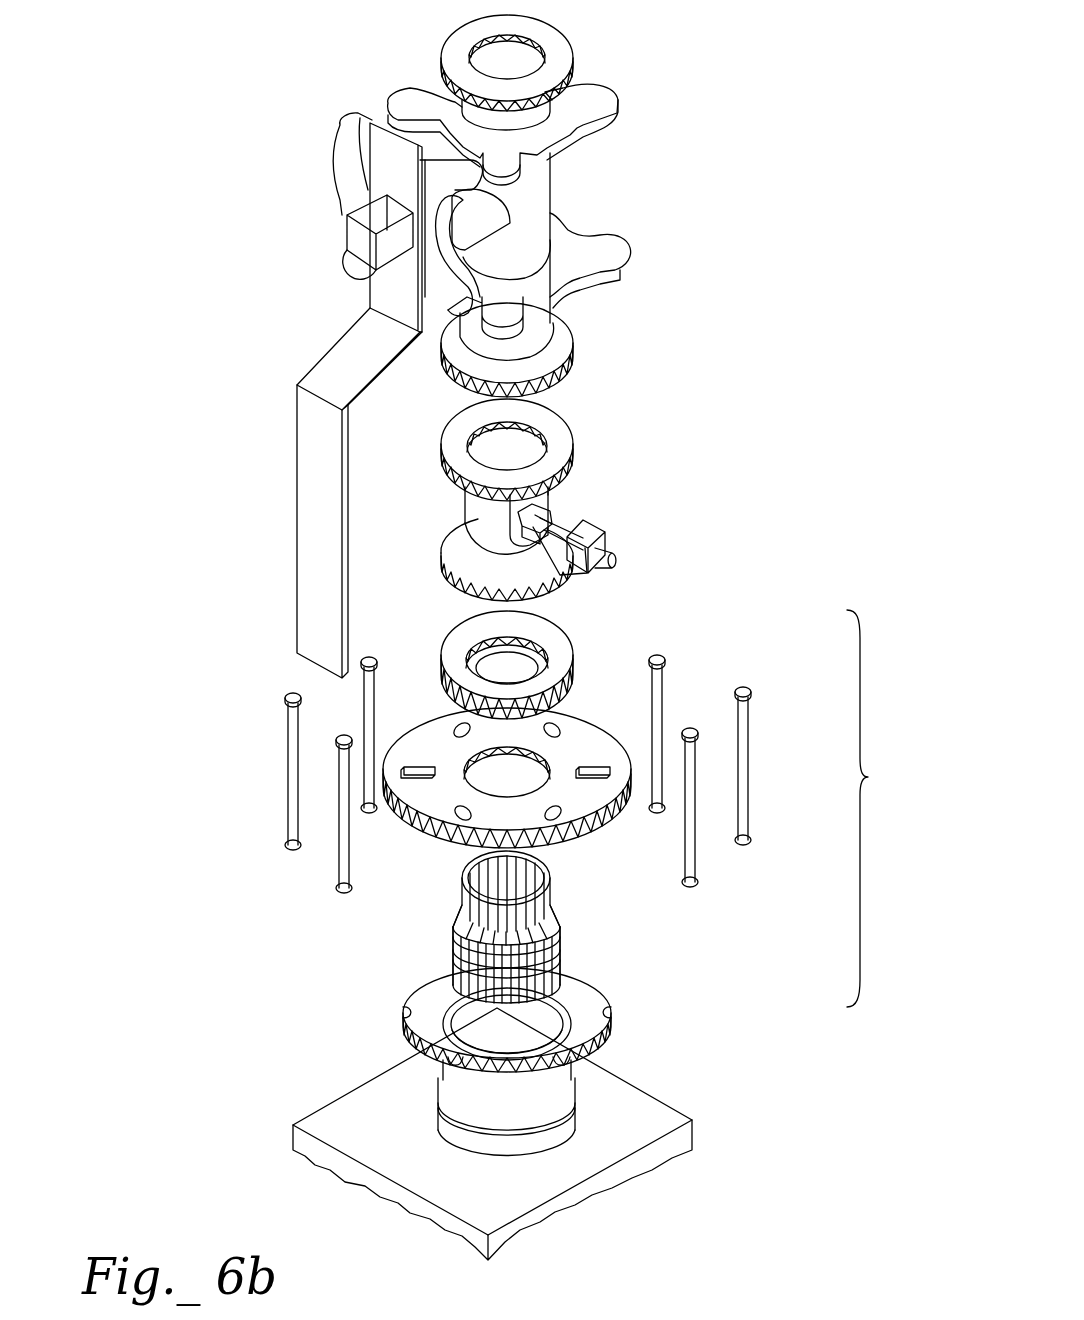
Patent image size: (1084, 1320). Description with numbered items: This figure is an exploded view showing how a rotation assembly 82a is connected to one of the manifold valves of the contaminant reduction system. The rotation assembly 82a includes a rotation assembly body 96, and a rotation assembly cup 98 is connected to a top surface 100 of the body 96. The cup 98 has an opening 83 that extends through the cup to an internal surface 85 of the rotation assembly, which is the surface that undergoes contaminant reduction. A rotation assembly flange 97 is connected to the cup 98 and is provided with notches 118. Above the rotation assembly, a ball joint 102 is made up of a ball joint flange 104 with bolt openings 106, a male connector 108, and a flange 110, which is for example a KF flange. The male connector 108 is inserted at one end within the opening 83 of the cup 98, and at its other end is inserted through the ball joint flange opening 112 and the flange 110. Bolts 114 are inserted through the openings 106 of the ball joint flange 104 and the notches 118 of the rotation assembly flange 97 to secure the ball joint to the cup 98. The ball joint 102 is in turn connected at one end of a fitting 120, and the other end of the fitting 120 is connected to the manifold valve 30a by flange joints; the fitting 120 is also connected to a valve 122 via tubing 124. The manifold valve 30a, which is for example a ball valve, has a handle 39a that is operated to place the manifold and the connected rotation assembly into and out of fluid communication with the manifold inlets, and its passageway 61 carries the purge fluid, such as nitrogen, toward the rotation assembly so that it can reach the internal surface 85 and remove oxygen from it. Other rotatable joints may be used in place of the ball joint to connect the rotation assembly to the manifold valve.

The passageway 61 is at (530, 62).
The manifold valve 30a is at (600, 160).
The handle 39a is at (298, 540).
The fitting 120 is at (577, 428).
The valve 122 is at (595, 535).
The tubing 124 is at (558, 522).
The flange 110 is at (455, 632).
The ball joint flange 104 is at (525, 721).
The ball joint flange opening 112 is at (523, 785).
The bolt openings 106 is at (607, 767).
The bolts 114 is at (665, 686).
The ball joint 102 is at (877, 808).
The male connector 108 is at (540, 856).
The rotation assembly flange 97 is at (536, 1018).
The opening 83 is at (550, 1022).
The internal surface 85 is at (410, 1010).
The notches 118 is at (403, 1012).
The rotation assembly 82a is at (524, 1134).
The rotation assembly body 96 is at (692, 1122).
The top surface 100 is at (325, 1122).
The rotation assembly cup 98 is at (555, 1098).